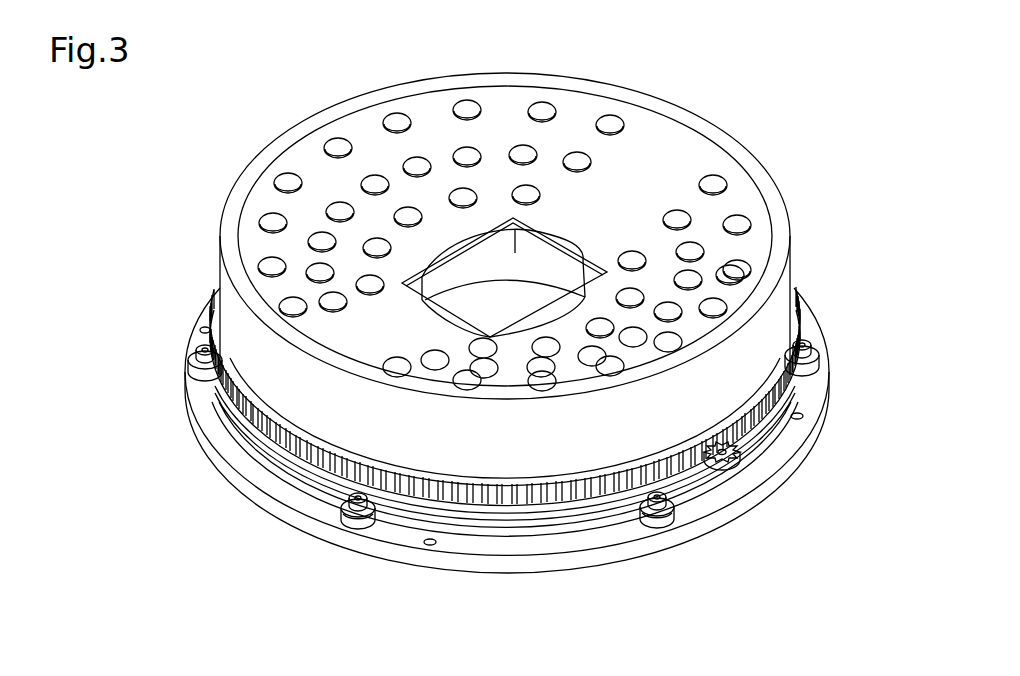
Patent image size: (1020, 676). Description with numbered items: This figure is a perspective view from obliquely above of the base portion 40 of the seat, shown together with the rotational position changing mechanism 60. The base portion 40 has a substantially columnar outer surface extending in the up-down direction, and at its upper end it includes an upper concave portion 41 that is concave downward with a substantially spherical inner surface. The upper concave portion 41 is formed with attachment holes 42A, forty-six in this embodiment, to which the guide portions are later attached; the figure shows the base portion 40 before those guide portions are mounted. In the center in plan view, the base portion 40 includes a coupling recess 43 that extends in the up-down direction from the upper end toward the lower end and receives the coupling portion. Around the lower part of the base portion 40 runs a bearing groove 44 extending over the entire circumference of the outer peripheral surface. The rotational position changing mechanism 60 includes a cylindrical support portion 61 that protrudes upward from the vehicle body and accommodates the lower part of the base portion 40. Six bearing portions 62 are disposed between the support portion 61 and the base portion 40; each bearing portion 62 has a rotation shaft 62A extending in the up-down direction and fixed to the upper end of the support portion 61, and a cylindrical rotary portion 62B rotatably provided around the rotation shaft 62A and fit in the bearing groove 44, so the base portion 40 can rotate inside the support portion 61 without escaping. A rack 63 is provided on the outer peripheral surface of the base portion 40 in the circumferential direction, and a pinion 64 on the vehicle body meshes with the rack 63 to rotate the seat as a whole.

The base portion 40 is at (505, 218).
The upper concave portion 41 is at (652, 158).
The attachment holes 42A is at (336, 146).
The coupling recess 43 is at (470, 302).
The bearing groove 44 is at (300, 490).
The rotational position changing mechanism 60 is at (739, 557).
The support portion 61 is at (808, 438).
The bearing portions 62 is at (499, 485).
The rotation shaft 62A is at (355, 504).
The rotary portion 62B is at (368, 522).
The rack 63 is at (547, 503).
The pinion 64 is at (747, 458).